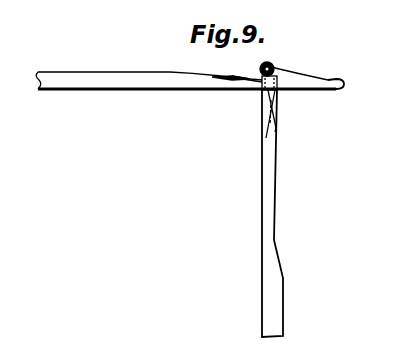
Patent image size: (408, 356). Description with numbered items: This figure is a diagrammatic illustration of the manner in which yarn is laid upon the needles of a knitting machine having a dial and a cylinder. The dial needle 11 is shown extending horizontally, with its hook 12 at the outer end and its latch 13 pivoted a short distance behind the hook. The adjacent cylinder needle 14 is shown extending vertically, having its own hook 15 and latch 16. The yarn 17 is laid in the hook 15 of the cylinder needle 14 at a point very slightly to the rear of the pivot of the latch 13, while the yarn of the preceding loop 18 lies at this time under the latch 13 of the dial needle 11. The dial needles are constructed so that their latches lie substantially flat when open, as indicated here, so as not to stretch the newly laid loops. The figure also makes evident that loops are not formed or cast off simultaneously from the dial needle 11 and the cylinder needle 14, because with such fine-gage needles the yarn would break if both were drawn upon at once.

The dial needle 11 is at (176, 79).
The hook 12 is at (347, 70).
The latch 13 is at (237, 65).
The cylinder needle 14 is at (270, 177).
The hook 15 is at (272, 58).
The latch 16 is at (278, 102).
The yarn 17 is at (277, 68).
The yarn of the preceding loop 18 is at (221, 84).